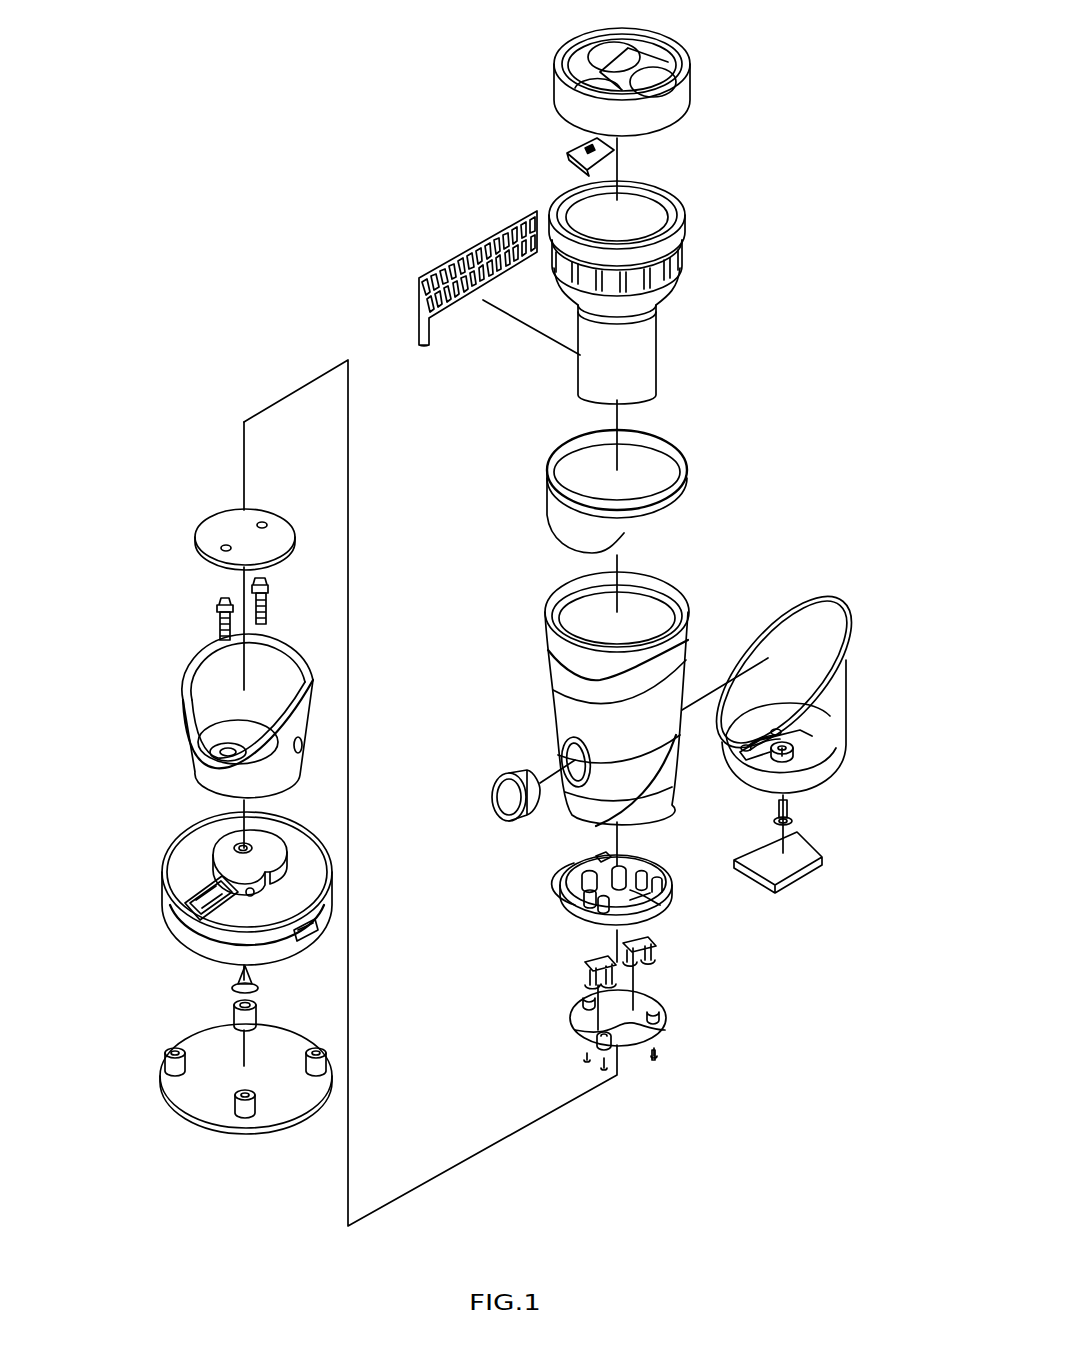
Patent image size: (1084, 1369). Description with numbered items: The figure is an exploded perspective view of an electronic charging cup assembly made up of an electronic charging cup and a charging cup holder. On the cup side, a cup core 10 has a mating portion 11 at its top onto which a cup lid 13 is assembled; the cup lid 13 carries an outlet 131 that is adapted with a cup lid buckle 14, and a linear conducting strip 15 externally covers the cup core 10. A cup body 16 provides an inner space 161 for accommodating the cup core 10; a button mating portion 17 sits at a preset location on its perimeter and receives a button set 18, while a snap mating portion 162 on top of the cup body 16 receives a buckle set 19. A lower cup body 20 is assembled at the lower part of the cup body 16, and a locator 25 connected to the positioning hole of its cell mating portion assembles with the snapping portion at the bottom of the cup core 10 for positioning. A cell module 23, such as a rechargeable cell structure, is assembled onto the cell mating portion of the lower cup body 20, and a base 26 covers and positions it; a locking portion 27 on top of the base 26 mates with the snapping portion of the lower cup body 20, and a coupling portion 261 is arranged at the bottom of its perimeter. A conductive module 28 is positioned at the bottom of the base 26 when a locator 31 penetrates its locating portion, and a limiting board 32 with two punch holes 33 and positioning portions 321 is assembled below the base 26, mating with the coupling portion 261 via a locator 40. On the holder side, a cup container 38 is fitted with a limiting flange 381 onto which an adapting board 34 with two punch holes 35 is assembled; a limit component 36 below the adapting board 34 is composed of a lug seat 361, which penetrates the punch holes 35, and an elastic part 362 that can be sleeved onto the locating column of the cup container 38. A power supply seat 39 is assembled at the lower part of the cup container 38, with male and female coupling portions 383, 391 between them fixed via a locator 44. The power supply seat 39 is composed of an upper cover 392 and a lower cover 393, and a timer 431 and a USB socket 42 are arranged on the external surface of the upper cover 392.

The cup core 10 is at (656, 328).
The mating portion 11 is at (682, 210).
The cup lid 13 is at (552, 80).
The outlet 131 is at (582, 68).
The cup lid buckle 14 is at (567, 153).
The linear conducting strip 15 is at (446, 256).
The cup body 16 is at (556, 694).
The inner space 161 is at (661, 598).
The snap mating portion 162 is at (564, 590).
The button mating portion 17 is at (562, 744).
The button set 18 is at (500, 778).
The buckle set 19 is at (687, 470).
The lower cup body 20 is at (848, 748).
The cell module 23 is at (800, 870).
The locator 25 is at (792, 821).
The base 26 is at (668, 900).
The coupling portion 261 is at (572, 868).
The locking portion 27 is at (597, 857).
The conductive module 28 is at (604, 960).
The locator 31 is at (600, 990).
The limiting board 32 is at (664, 1020).
The positioning portions 321 is at (598, 1046).
The punch holes 33 is at (648, 1040).
The locator 40 is at (603, 1066).
The adapting board 34 is at (212, 520).
The punch holes 35 is at (231, 548).
The limit component 36 is at (182, 609).
The lug seat 361 is at (222, 601).
The elastic part 362 is at (220, 624).
The cup container 38 is at (178, 720).
The limiting flange 381 is at (195, 702).
The male coupling portion 383 is at (207, 760).
The power supply seat 39 is at (145, 866).
The female coupling portion 391 is at (226, 841).
The upper cover 392 is at (170, 882).
The timer 431 is at (185, 905).
The USB socket 42 is at (306, 936).
The locator 44 is at (233, 990).
The lower cover 393 is at (162, 1076).